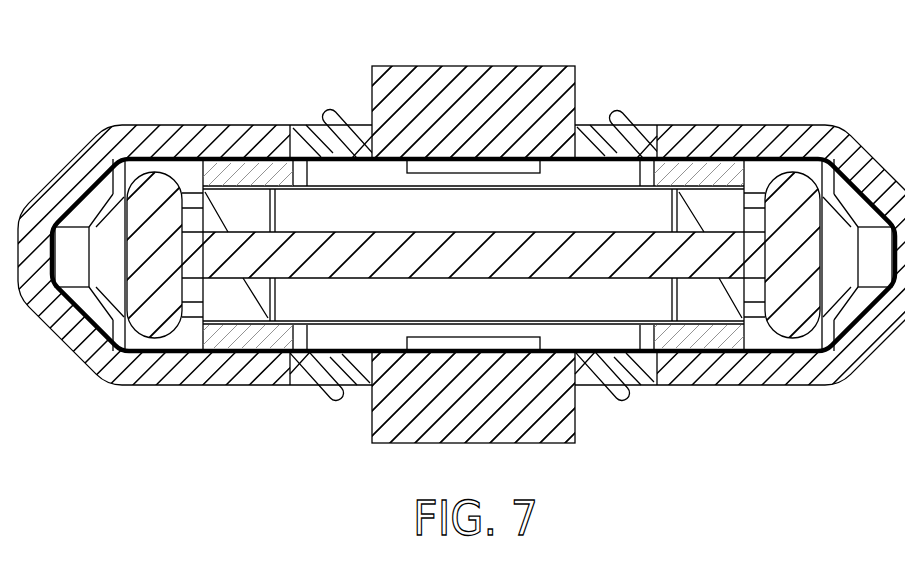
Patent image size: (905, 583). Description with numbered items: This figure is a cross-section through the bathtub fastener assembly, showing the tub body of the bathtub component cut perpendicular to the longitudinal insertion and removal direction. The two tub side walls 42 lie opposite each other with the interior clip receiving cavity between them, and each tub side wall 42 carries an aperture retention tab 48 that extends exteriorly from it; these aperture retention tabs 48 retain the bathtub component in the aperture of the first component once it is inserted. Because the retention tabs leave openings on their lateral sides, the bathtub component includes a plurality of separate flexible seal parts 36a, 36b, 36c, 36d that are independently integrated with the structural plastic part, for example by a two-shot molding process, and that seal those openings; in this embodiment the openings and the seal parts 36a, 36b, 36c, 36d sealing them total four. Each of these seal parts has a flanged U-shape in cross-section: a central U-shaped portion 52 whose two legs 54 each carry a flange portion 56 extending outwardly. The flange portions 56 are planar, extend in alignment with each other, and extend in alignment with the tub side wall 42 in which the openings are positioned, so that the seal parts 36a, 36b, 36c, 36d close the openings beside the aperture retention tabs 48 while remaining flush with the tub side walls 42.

The flexible seal part 36a is at (330, 96).
The flexible seal part 36b is at (616, 96).
The flexible seal part 36c is at (331, 422).
The fourth terminal 36d is at (617, 424).
The tub side wall 42 is at (765, 138).
The aperture retention tab 48 is at (470, 77).
The central U-shaped portion 52 is at (330, 168).
The leg 54 is at (350, 125).
The flange portion 56 is at (367, 143).